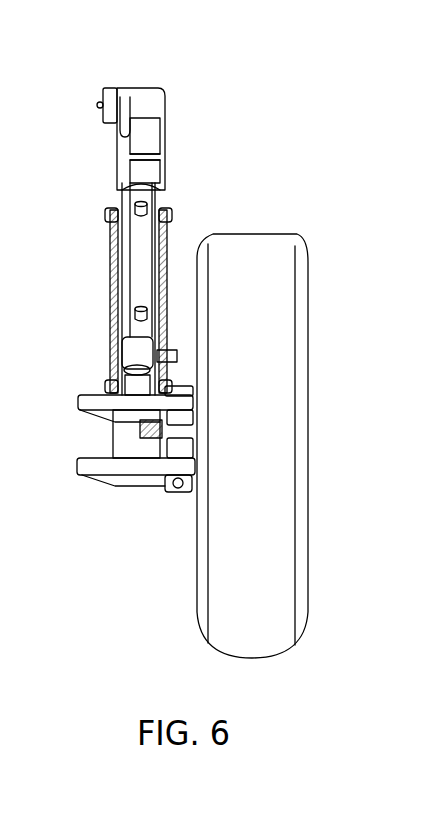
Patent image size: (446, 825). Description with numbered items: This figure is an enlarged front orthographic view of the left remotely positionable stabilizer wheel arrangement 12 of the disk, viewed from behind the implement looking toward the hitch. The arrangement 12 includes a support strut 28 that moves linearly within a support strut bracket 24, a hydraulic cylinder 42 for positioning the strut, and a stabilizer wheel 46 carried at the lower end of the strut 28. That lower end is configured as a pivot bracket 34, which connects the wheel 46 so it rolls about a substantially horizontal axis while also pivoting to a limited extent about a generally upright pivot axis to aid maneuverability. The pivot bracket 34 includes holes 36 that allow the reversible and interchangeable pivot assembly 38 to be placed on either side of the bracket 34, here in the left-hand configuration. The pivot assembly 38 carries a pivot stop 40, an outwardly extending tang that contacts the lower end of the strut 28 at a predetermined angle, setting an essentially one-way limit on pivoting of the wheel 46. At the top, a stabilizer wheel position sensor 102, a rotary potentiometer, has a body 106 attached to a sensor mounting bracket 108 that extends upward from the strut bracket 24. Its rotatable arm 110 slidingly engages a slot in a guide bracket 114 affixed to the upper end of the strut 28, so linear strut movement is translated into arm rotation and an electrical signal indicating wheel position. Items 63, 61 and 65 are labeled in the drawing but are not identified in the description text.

The remotely positionable stabilizer wheel arrangement 12 is at (322, 557).
The stabilizer wheel 46 is at (290, 355).
The support strut bracket 24 is at (112, 265).
The hydraulic cylinder 42 is at (146, 242).
The holes 36 is at (173, 388).
The upper plate 63 is at (97, 393).
The support strut 28 is at (125, 433).
The pivot bracket 34 is at (85, 472).
The pivot stop 40 is at (148, 427).
The pivot assembly 38 is at (178, 489).
The fork assembly 61 is at (87, 493).
The axle assembly 65 is at (185, 505).
The rotatable arm 110 is at (127, 103).
The stabilizer wheel position sensor 102 is at (153, 122).
The body 106 is at (148, 137).
The sensor mounting bracket 108 is at (150, 175).
The guide bracket 114 is at (112, 117).